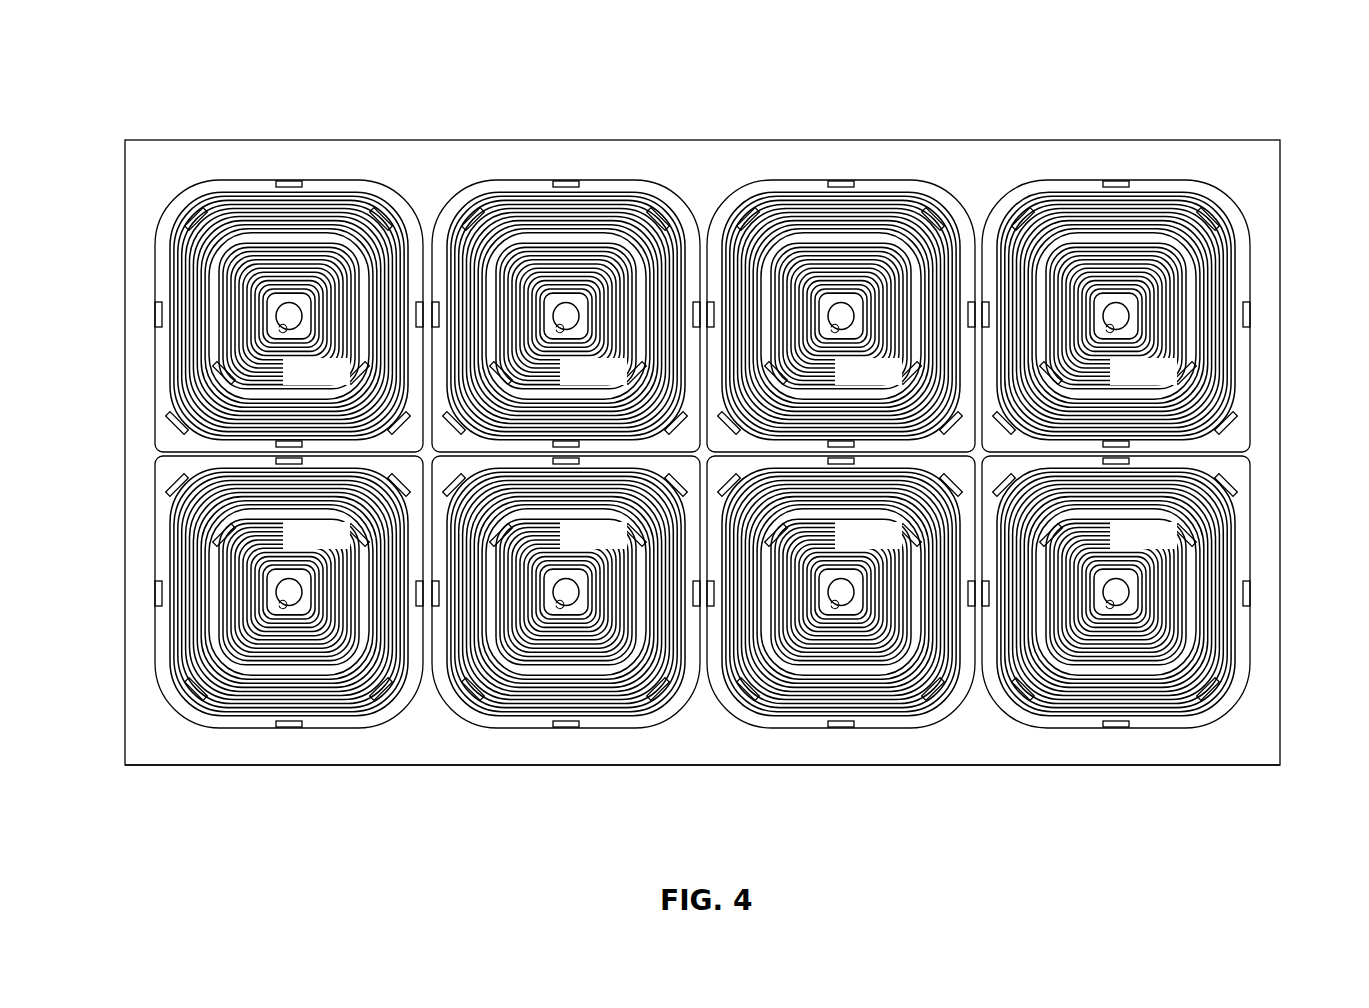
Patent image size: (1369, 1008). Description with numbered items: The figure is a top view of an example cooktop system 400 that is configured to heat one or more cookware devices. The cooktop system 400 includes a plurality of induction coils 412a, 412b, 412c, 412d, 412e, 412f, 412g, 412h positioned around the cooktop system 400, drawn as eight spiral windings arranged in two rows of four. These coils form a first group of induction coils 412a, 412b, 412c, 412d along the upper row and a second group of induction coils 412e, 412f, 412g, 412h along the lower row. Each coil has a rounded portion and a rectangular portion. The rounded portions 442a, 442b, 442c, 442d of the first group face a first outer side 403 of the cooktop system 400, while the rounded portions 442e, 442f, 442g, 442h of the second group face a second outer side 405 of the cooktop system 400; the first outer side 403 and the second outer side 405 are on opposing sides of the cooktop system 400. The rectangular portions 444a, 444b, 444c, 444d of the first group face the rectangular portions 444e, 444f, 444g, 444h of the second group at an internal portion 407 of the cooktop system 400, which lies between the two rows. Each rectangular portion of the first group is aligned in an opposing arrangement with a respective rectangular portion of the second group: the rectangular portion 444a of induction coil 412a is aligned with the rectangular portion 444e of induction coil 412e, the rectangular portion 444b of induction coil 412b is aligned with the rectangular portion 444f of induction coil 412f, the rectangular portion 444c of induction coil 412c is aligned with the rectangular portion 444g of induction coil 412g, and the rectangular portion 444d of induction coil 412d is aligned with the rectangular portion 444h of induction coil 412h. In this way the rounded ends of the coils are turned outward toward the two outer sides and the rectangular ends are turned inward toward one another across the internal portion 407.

The cooktop system 400 is at (148, 52).
The first outer side 403 is at (197, 140).
The second outer side 405 is at (197, 765).
The internal portion 407 is at (160, 450).
The induction coil 412a is at (255, 208).
The induction coil 412b is at (532, 208).
The induction coil 412c is at (807, 208).
The induction coil 412d is at (1082, 208).
The induction coil 412e is at (265, 690).
The induction coil 412f is at (542, 690).
The induction coil 412g is at (817, 690).
The induction coil 412h is at (1092, 690).
The rounded portion 442a is at (290, 190).
The rounded portion 442b is at (567, 190).
The rounded portion 442c is at (842, 190).
The rounded portion 442d is at (1117, 190).
The rounded portion 442e is at (286, 727).
The rounded portion 442f is at (563, 727).
The rounded portion 442g is at (838, 727).
The rounded portion 442h is at (1113, 727).
The rectangular portion 444a is at (289, 441).
The rectangular portion 444b is at (566, 441).
The rectangular portion 444c is at (841, 441).
The rectangular portion 444d is at (1116, 441).
The rectangular portion 444e is at (289, 464).
The rectangular portion 444f is at (566, 464).
The rectangular portion 444g is at (841, 464).
The rectangular portion 444h is at (1116, 464).